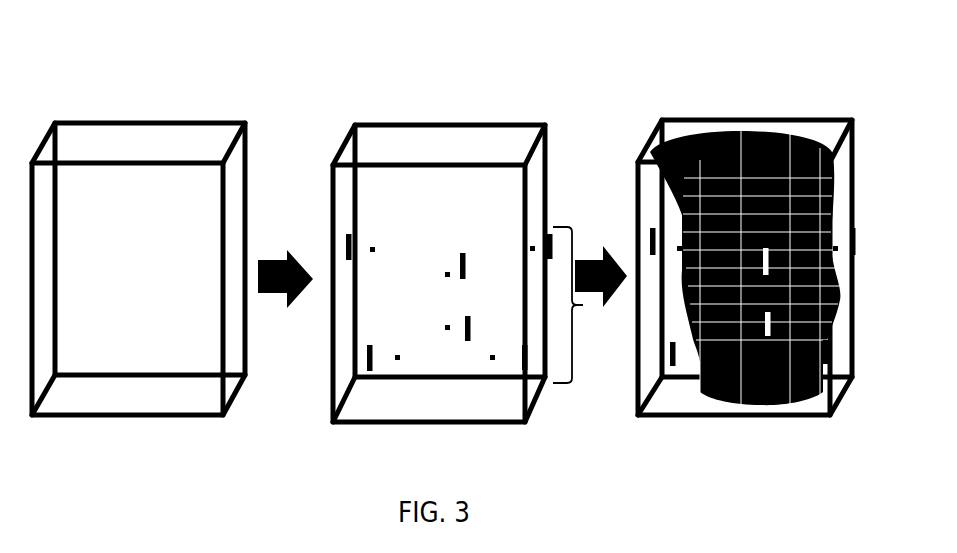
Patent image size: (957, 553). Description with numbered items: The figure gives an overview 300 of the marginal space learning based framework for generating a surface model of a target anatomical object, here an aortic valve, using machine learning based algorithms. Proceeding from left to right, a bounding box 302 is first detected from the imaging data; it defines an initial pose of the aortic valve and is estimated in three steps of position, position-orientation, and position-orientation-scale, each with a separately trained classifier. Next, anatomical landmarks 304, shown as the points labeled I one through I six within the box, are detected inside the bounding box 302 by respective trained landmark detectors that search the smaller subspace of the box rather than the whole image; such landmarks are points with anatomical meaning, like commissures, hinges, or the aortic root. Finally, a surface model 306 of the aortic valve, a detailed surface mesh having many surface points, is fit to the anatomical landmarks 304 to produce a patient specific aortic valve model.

The process of generating a 3D model from light sources 300 is at (452, 42).
The bounding box 302 is at (123, 120).
The anatomical landmarks 304 is at (588, 305).
The surface model 306 is at (752, 132).